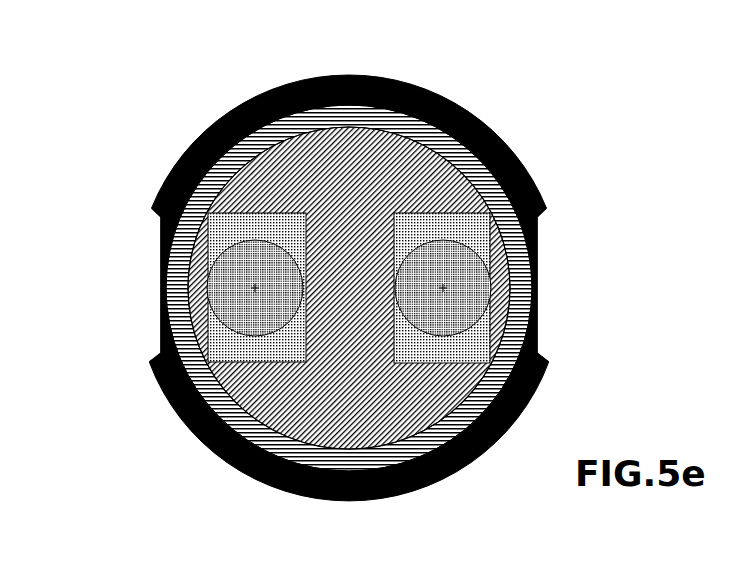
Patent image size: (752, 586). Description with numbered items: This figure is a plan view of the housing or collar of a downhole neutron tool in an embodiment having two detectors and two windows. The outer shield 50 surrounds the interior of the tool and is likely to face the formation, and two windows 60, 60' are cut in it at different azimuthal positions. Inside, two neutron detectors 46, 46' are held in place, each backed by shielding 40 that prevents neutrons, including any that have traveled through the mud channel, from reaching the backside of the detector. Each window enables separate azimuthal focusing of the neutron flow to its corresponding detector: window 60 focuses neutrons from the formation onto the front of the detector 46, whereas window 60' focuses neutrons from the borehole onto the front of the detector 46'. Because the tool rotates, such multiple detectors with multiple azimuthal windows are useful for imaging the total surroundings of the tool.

The shielding 40 is at (288, 357).
The detector 46 is at (430, 182).
The detector 46' is at (255, 180).
The outer shield 50 is at (446, 98).
The window 60 is at (586, 285).
The window 60' is at (103, 285).